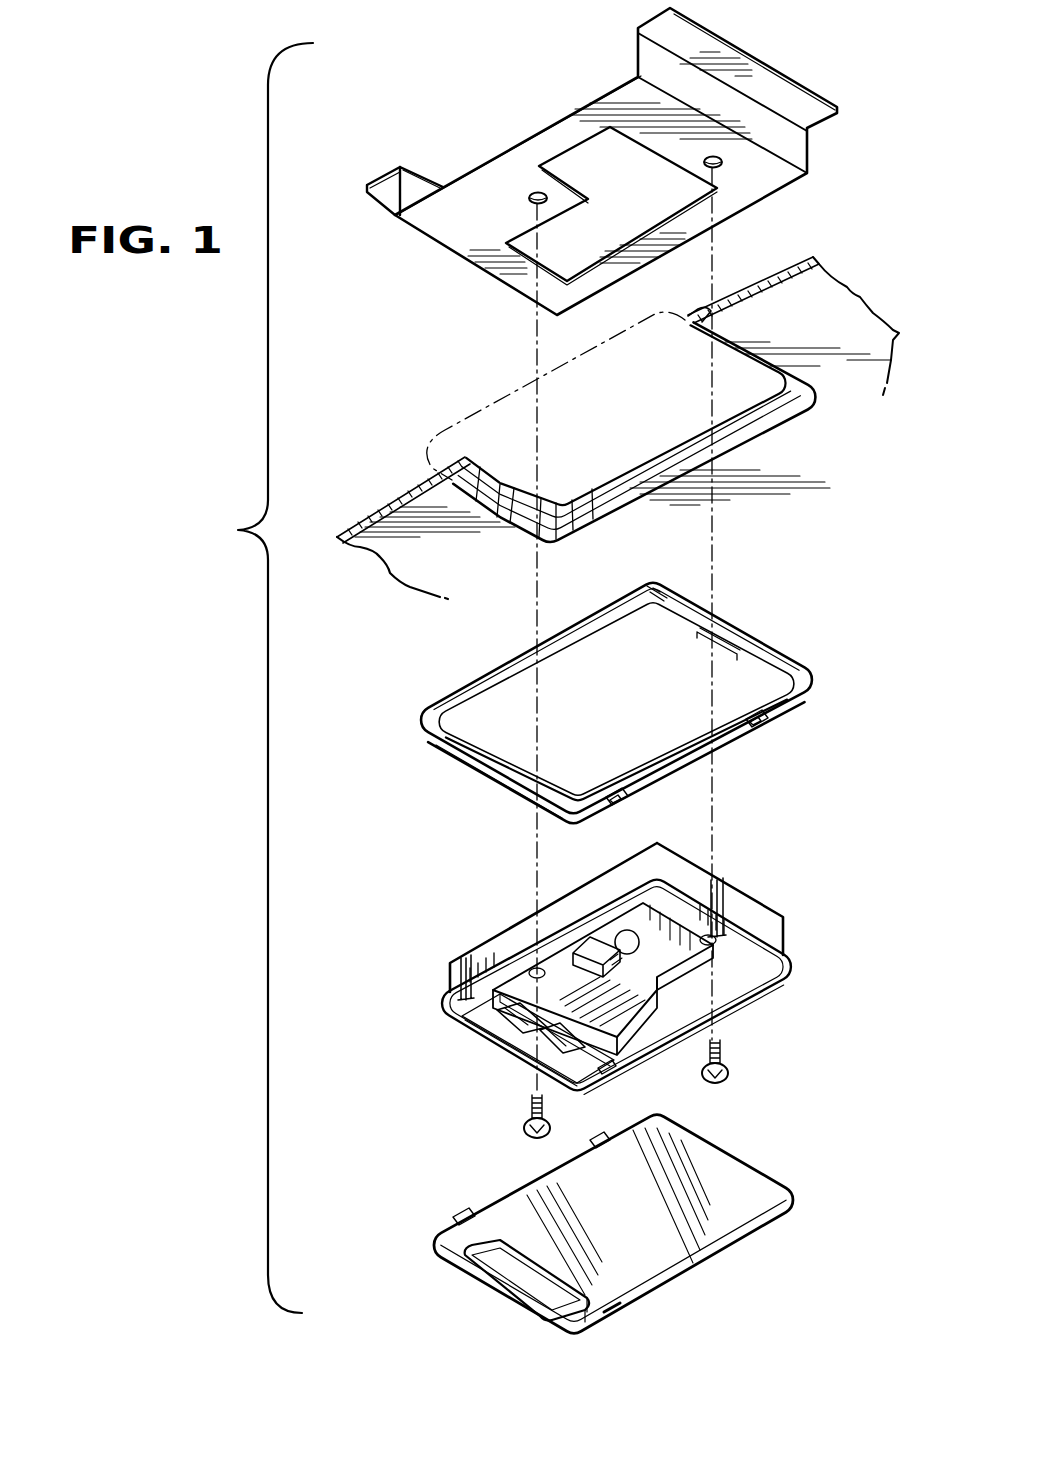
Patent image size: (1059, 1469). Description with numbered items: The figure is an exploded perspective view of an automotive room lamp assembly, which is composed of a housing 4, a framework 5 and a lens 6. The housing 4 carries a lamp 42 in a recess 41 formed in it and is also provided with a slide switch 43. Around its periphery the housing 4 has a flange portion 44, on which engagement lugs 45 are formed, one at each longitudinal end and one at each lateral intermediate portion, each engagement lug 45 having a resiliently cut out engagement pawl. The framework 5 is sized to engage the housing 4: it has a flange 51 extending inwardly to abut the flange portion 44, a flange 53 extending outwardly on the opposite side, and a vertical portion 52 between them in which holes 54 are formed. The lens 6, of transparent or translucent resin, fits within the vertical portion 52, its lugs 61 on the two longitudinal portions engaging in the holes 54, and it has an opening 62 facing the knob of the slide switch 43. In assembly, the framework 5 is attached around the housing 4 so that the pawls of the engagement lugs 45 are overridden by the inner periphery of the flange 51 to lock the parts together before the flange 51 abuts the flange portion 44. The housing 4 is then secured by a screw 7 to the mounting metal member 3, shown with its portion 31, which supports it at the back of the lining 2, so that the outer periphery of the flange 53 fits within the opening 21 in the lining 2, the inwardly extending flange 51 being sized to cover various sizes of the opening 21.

The lining 2 is at (867, 283).
The opening 21 is at (630, 470).
The mounting metal member 3 is at (797, 78).
The raised portion with screw holes 31 is at (537, 193).
The housing 4 is at (788, 937).
The recess 41 is at (663, 910).
The lamp 42 is at (623, 937).
The slide switch 43 is at (503, 1047).
The flange portion 44 is at (770, 987).
The engagement lug 45 is at (723, 910).
The framework 5 is at (812, 667).
The flange 51 is at (660, 747).
The vertical portion 52 is at (480, 755).
The flange 53 is at (427, 733).
The holes 54 is at (760, 725).
The lens 6 is at (792, 1197).
The lugs 61 is at (600, 1140).
The opening 62 is at (500, 1263).
The screw 7 is at (727, 1077).